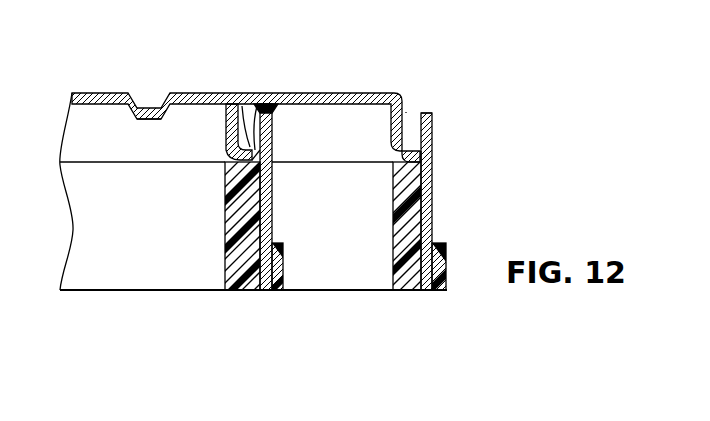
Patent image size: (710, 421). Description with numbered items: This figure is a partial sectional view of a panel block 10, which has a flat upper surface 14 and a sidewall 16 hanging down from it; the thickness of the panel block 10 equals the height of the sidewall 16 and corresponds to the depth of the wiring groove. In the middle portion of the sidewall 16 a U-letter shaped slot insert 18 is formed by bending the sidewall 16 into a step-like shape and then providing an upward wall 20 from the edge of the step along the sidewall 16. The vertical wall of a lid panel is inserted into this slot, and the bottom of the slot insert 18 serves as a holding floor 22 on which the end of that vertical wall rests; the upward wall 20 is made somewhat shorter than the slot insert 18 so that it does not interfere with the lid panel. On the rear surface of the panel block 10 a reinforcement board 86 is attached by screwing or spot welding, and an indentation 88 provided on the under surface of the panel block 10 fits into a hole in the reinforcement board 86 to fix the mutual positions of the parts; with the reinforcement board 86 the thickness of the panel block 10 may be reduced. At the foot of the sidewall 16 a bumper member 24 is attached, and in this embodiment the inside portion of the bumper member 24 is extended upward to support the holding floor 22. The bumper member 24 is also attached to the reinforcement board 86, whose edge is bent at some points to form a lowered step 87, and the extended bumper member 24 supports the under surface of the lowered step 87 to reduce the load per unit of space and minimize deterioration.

The panel block 10 is at (213, 88).
The upper surface 14 is at (357, 92).
The sidewall 16 is at (433, 203).
The slot insert 18 is at (406, 110).
The upward wall 20 is at (432, 117).
The holding floor 22 is at (432, 148).
The bumper member 24 is at (233, 223).
The reinforcement board 86 is at (272, 214).
The lowered step 87 is at (265, 100).
The indentation 88 is at (150, 117).